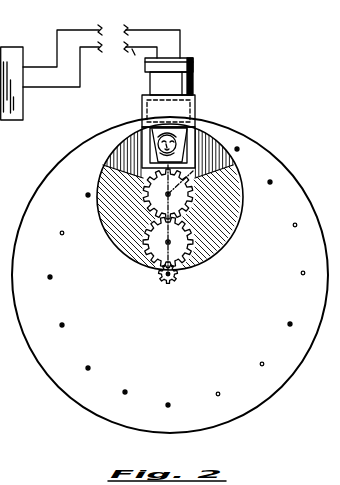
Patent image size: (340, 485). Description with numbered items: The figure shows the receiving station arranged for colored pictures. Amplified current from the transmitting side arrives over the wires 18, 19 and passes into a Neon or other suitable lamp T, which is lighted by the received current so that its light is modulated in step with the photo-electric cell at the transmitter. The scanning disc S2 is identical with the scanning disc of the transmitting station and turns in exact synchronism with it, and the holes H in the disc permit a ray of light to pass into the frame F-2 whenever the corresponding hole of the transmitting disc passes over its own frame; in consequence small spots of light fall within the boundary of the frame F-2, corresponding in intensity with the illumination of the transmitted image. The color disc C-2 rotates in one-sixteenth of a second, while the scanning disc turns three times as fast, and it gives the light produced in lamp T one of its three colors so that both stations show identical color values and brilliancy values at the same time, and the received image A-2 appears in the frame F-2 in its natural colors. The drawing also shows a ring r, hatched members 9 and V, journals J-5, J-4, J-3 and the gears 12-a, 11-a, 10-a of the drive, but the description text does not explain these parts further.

The wire 19 is at (180, 38).
The wire 18 is at (90, 64).
The lamp T is at (193, 80).
The received image A-2 is at (187, 128).
The frame F-2 is at (143, 130).
The ring r is at (208, 138).
The color disc C-2 is at (214, 167).
The left jaw 9 is at (110, 205).
The right jaw V is at (226, 219).
The journal J-5 is at (150, 212).
The journal J-4 is at (147, 257).
The journal J-3 is at (163, 285).
The upper gear 12-a is at (168, 194).
The lower gear 11-a is at (168, 242).
The pinion 10-a is at (177, 281).
The scanning disc S2 is at (32, 353).
The holes H is at (125, 390).